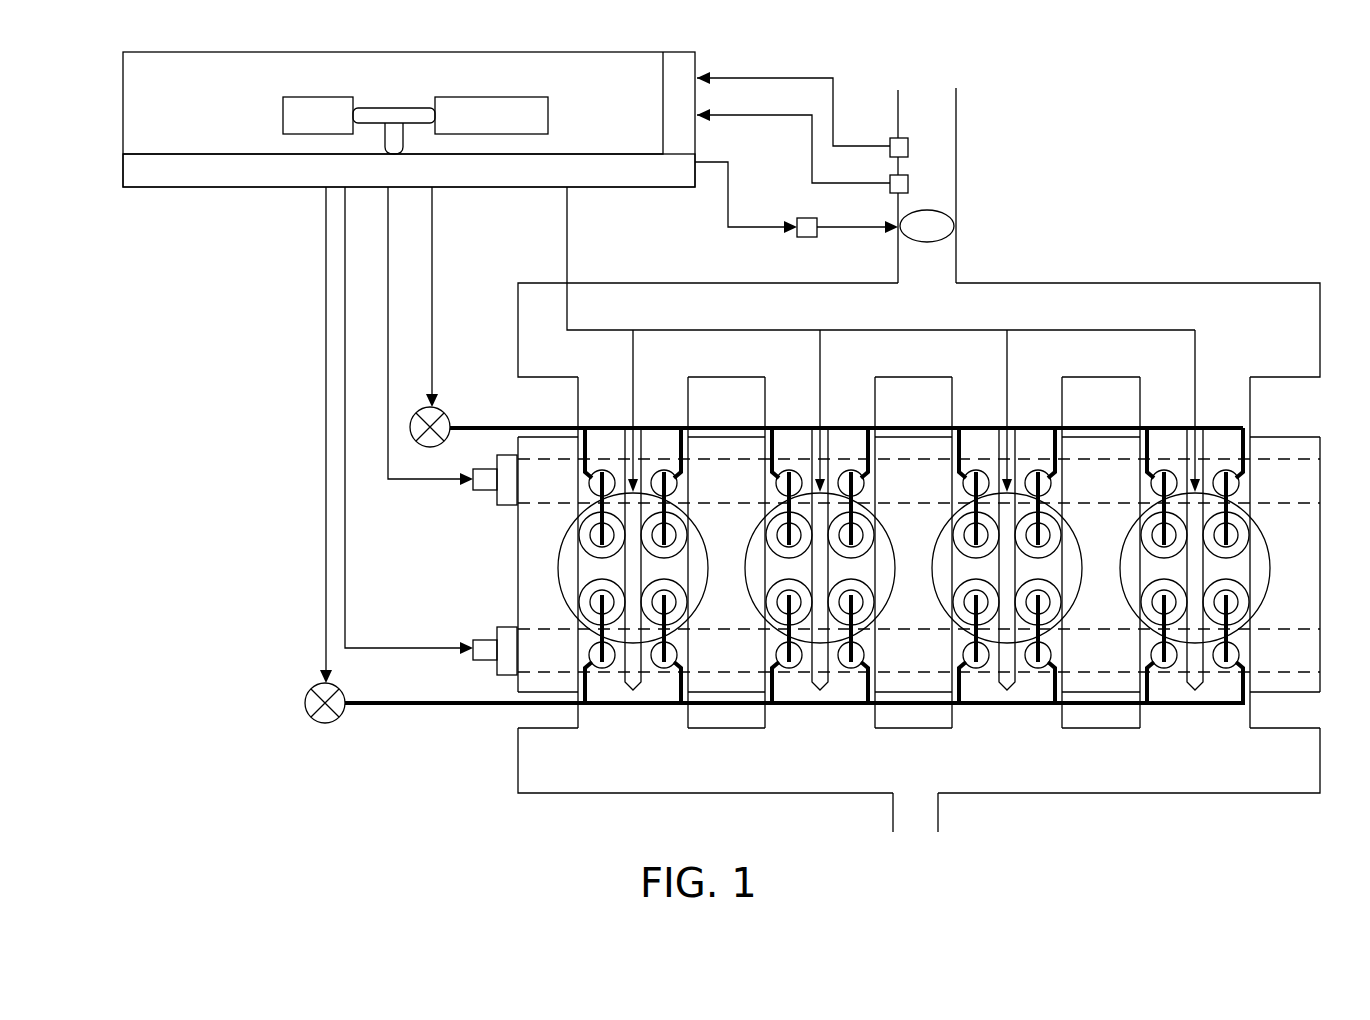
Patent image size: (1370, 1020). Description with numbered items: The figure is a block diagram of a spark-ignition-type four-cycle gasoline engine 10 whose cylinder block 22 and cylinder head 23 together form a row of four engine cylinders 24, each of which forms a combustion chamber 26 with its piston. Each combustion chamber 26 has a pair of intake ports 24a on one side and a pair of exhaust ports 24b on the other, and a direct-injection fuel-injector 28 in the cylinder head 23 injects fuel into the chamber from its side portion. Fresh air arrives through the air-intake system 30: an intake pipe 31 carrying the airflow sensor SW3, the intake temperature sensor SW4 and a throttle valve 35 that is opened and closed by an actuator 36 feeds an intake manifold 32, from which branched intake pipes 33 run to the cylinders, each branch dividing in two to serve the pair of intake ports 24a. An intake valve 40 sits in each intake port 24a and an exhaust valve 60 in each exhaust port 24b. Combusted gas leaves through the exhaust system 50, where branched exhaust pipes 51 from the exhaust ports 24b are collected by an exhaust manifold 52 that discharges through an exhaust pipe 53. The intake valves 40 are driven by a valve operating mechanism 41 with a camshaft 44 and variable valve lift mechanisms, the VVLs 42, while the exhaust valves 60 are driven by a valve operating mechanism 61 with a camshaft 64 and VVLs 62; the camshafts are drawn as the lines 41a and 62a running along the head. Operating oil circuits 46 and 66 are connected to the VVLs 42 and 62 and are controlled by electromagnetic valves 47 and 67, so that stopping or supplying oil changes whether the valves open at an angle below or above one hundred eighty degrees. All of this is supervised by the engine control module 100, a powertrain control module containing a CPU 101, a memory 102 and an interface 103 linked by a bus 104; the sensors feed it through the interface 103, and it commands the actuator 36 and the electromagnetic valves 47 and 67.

The engine 10 is at (1200, 135).
The engine control module 100 is at (247, 208).
The CPU 101 is at (330, 85).
The memory 102 is at (478, 97).
The interface 103 is at (612, 143).
The bus 104 is at (393, 108).
The cylinder block 22 is at (926, 552).
The cylinder head 23 is at (1255, 436).
The engine cylinder 24 is at (556, 645).
The combustion chamber 26 is at (914, 568).
The intake port 24a is at (640, 558).
The exhaust port 24b is at (620, 588).
The fuel-injector 28 is at (633, 500).
The air-intake system 30 is at (531, 263).
The intake pipe 31 is at (957, 183).
The intake manifold 32 is at (1076, 283).
The branched intake pipe 33 is at (690, 392).
The throttle valve 35 is at (942, 222).
The actuator 36 is at (803, 218).
The airflow sensor SW3 is at (888, 138).
The intake temperature sensor SW4 is at (910, 175).
The intake valve 40 is at (673, 523).
The valve operating mechanism 41 is at (483, 497).
The intake camshaft 41a is at (545, 503).
The VVL 42 is at (598, 472).
The camshaft 44 is at (505, 505).
The operating oil circuit 46 is at (505, 427).
The electromagnetic valve 47 is at (463, 410).
The exhaust system 50 is at (505, 780).
The branched exhaust pipe 51 is at (691, 722).
The exhaust manifold 52 is at (1215, 795).
The exhaust pipe 53 is at (942, 803).
The exhaust valve 60 is at (667, 607).
The valve operating mechanism 61 is at (471, 638).
The VVL 62 is at (914, 709).
The exhaust camshaft 62a is at (545, 628).
The camshaft 64 is at (499, 632).
The operating oil circuit 66 is at (410, 702).
The electromagnetic valve 67 is at (311, 690).